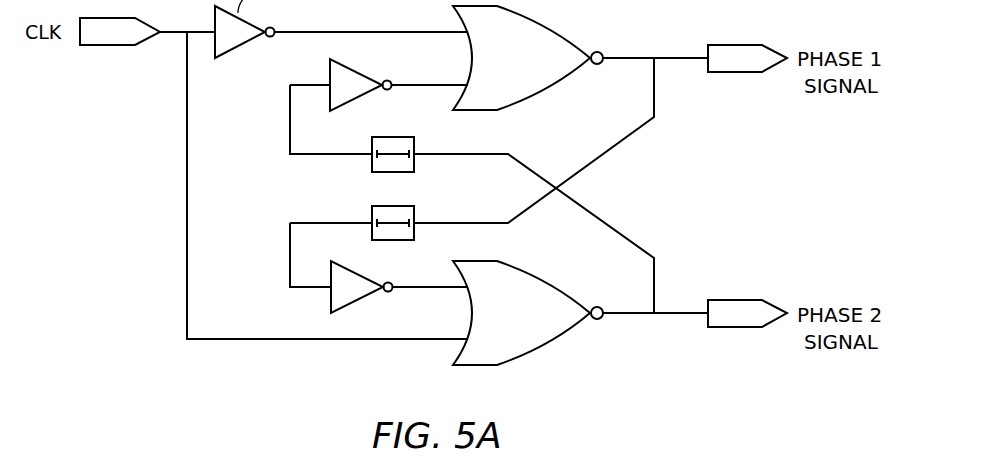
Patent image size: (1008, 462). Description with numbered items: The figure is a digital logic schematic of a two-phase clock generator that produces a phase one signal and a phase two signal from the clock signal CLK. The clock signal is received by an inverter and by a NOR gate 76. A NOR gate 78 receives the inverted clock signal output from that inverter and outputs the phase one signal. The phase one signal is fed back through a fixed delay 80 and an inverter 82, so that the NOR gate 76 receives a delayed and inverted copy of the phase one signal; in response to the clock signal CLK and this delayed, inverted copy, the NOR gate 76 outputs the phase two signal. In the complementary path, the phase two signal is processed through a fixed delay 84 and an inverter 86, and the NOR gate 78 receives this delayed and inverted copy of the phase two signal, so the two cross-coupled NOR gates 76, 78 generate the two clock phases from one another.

The NOR gate 76 is at (525, 321).
The NOR gate 78 is at (525, 66).
The fixed delay 80 is at (408, 206).
The inverter 82 is at (349, 305).
The fixed delay 84 is at (391, 137).
The inverter 86 is at (360, 72).